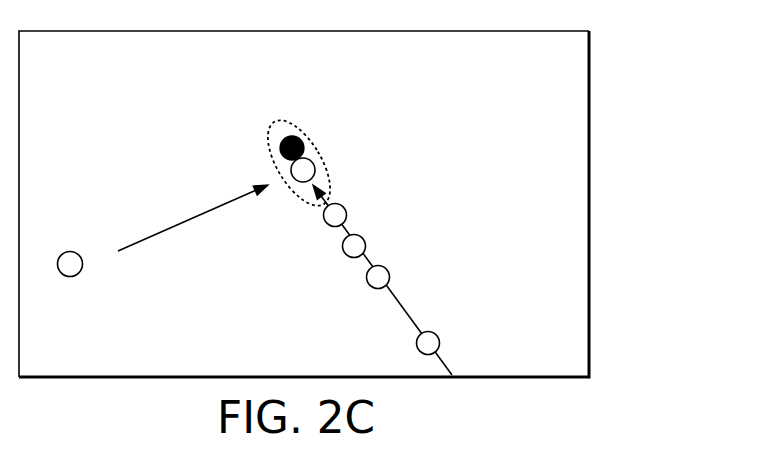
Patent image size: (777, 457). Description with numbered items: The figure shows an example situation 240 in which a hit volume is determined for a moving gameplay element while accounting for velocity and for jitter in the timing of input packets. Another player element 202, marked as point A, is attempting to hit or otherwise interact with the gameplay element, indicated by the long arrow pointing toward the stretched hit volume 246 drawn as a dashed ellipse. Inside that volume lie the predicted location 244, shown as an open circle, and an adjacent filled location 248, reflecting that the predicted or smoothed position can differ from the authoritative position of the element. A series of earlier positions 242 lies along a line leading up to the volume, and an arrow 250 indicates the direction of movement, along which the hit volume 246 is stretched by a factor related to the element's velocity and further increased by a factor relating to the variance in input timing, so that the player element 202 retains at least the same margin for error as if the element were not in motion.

The map view / display frame 240 is at (656, 110).
The player element 202 is at (75, 252).
The hit volume 246 is at (311, 131).
The selected point (filled) 248 is at (283, 141).
The predicted location 244 is at (315, 173).
The route path with waypoints 242 is at (412, 320).
The direction arrow along route 250 is at (326, 219).